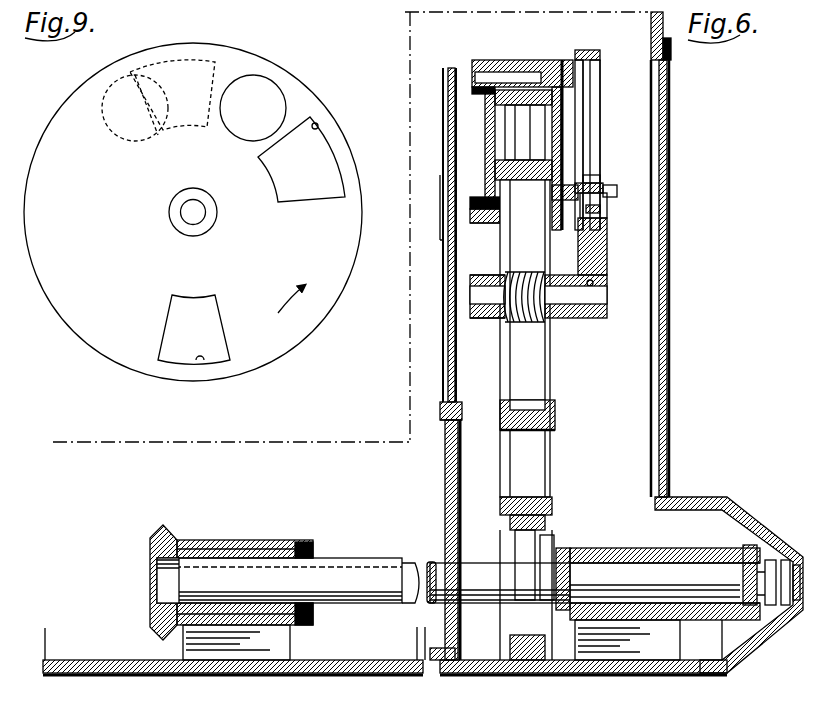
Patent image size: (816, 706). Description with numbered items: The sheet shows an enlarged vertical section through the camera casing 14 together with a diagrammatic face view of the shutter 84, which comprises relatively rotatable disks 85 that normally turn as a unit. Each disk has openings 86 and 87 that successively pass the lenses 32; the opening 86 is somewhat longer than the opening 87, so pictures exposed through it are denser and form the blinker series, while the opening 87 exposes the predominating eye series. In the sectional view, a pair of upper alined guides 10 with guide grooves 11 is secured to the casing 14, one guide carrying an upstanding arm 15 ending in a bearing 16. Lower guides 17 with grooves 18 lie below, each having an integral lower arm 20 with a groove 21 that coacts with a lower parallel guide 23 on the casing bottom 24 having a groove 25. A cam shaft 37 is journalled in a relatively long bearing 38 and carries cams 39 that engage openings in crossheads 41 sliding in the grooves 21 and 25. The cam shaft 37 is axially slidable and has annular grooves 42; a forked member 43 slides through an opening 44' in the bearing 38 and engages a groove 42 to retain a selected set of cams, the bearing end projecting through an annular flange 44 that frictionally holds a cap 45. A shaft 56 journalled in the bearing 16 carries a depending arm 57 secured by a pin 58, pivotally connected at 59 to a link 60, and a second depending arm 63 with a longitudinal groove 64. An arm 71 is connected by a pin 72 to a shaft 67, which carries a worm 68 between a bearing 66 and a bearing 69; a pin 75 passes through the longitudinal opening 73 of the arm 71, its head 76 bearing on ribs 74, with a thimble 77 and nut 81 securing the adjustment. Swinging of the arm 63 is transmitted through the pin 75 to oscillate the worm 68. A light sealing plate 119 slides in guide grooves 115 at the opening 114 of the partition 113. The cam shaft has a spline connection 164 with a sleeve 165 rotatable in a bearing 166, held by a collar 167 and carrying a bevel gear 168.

In FIG. 9, the shutter disk 85 is at (347, 252).
In FIG. 9, the shutter 84 is at (322, 328).
In FIG. 9, the lens 32 is at (270, 84).
In FIG. 9, the shutter opening 86 is at (218, 62).
In FIG. 9, the shutter opening 87 is at (199, 360).
In FIG. 6, the casing 14 is at (681, 254).
In FIG. 6, the light sealing plate 119 is at (447, 340).
In FIG. 6, the opening 114 is at (445, 398).
In FIG. 6, the guide groove 115 is at (447, 420).
In FIG. 6, the partition 113 is at (445, 483).
In FIG. 6, the bearing 16 is at (537, 60).
In FIG. 6, the shaft 56 is at (511, 72).
In FIG. 6, the pin 58 is at (480, 94).
In FIG. 6, the depending arm 57 is at (488, 135).
In FIG. 6, the upper guide 10 is at (500, 150).
In FIG. 6, the upstanding arm 15 is at (522, 125).
In FIG. 6, the link 60 is at (480, 197).
In FIG. 6, the pivotal connection 59 is at (478, 224).
In FIG. 6, the guide groove 11 is at (525, 185).
In FIG. 6, the pin 75 is at (555, 196).
In FIG. 6, the depending arm 63 is at (578, 115).
In FIG. 6, the longitudinal groove 64 is at (592, 130).
In FIG. 6, the longitudinal rib 74 is at (595, 150).
In FIG. 6, the longitudinal opening 73 is at (598, 167).
In FIG. 6, the head 76 is at (603, 182).
In FIG. 6, the thimble 77 is at (615, 186).
In FIG. 6, the nut 81 is at (608, 215).
In FIG. 6, the arm 71 is at (604, 240).
In FIG. 6, the pin 72 is at (594, 283).
In FIG. 6, the shaft 67 is at (480, 284).
In FIG. 6, the bearing 66 is at (487, 319).
In FIG. 6, the worm 68 is at (512, 322).
In FIG. 6, the bearing 69 is at (558, 319).
In FIG. 6, the guide groove 18 is at (530, 405).
In FIG. 6, the lower guide 17 is at (556, 420).
In FIG. 6, the guide groove 21 is at (522, 500).
In FIG. 6, the lower arm 20 is at (552, 500).
In FIG. 6, the cam 39 is at (566, 545).
In FIG. 6, the cam shaft 37 is at (478, 560).
In FIG. 6, the bearing 38 is at (606, 548).
In FIG. 6, the crosshead 41 is at (510, 640).
In FIG. 6, the lower parallel guide 23 is at (510, 653).
In FIG. 6, the bottom 24 is at (646, 675).
In FIG. 6, the guide groove 25 is at (519, 675).
In FIG. 6, the annular flange 44 is at (729, 560).
In FIG. 6, the forked member 43 is at (748, 545).
In FIG. 6, the cap 45 is at (773, 545).
In FIG. 6, the opening 44' is at (730, 581).
In FIG. 6, the annular groove 42 is at (792, 610).
In FIG. 6, the spline connection 164 is at (355, 558).
In FIG. 6, the sleeve 165 is at (240, 558).
In FIG. 6, the bearing 166 is at (284, 541).
In FIG. 6, the collar 167 is at (312, 545).
In FIG. 6, the bevel gear 168 is at (160, 528).